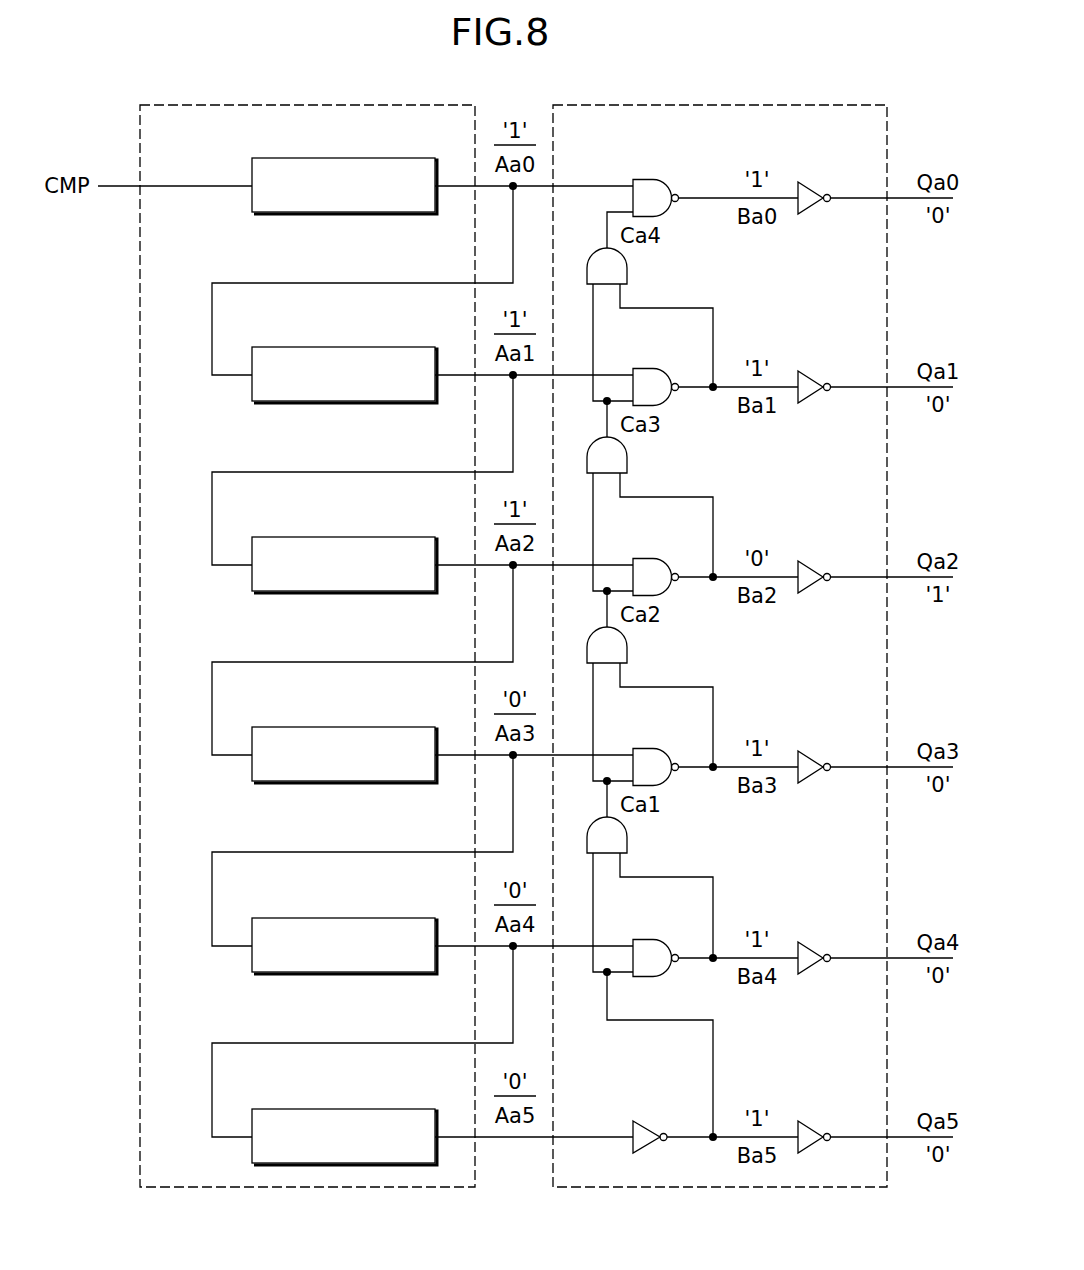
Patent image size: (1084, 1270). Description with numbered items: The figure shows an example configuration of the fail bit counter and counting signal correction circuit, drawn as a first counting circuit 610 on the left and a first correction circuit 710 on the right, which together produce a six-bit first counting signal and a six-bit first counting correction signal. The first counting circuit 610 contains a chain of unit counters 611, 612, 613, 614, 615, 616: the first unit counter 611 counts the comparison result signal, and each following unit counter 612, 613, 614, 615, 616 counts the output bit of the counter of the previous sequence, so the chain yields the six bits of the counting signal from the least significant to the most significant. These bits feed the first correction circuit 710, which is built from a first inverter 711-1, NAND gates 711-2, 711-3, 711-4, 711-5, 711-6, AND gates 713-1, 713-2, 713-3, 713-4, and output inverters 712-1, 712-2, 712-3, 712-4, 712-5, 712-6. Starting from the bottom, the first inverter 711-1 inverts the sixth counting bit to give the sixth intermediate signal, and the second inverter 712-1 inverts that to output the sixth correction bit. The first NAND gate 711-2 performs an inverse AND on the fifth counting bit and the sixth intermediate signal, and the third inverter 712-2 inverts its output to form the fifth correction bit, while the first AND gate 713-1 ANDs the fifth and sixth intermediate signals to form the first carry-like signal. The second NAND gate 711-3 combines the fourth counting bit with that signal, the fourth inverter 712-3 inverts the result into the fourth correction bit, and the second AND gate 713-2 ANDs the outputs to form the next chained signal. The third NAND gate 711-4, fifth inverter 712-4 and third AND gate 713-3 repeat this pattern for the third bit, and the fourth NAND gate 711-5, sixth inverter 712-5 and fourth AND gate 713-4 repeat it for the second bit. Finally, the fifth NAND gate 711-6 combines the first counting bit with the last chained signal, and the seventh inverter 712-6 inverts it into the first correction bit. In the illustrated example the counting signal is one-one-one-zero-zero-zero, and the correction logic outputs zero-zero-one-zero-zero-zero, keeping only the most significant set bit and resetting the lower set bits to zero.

The first counting circuit 610 is at (430, 105).
The unit counter 611 is at (392, 158).
The unit counter 612 is at (392, 347).
The unit counter 613 is at (392, 537).
The unit counter 614 is at (392, 727).
The unit counter 615 is at (392, 918).
The unit counter 616 is at (392, 1109).
The first correction circuit 710 is at (842, 105).
The first inverter 711-1 is at (643, 1124).
The first NAND gate 711-2 is at (641, 939).
The second NAND gate 711-3 is at (641, 748).
The third NAND gate 711-4 is at (641, 558).
The fourth NAND gate 711-5 is at (641, 368).
The fifth NAND gate 711-6 is at (641, 179).
The second inverter 712-1 is at (805, 1126).
The third inverter 712-2 is at (805, 947).
The fourth inverter 712-3 is at (805, 756).
The fifth inverter 712-4 is at (805, 566).
The sixth inverter 712-5 is at (805, 376).
The seventh inverter 712-6 is at (805, 187).
The first AND gate 713-1 is at (627, 840).
The second AND gate 713-2 is at (627, 650).
The third AND gate 713-3 is at (627, 460).
The fourth AND gate 713-4 is at (627, 271).